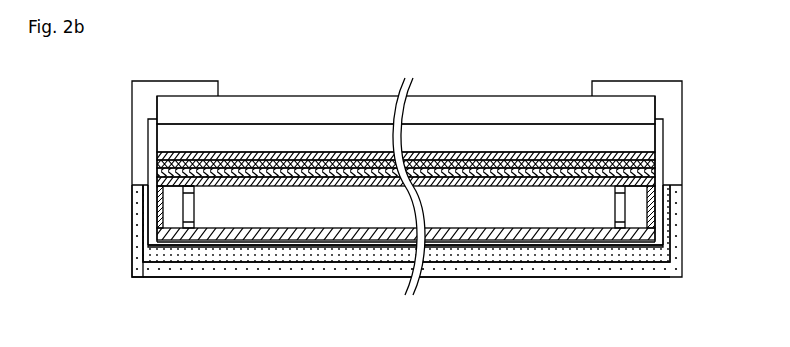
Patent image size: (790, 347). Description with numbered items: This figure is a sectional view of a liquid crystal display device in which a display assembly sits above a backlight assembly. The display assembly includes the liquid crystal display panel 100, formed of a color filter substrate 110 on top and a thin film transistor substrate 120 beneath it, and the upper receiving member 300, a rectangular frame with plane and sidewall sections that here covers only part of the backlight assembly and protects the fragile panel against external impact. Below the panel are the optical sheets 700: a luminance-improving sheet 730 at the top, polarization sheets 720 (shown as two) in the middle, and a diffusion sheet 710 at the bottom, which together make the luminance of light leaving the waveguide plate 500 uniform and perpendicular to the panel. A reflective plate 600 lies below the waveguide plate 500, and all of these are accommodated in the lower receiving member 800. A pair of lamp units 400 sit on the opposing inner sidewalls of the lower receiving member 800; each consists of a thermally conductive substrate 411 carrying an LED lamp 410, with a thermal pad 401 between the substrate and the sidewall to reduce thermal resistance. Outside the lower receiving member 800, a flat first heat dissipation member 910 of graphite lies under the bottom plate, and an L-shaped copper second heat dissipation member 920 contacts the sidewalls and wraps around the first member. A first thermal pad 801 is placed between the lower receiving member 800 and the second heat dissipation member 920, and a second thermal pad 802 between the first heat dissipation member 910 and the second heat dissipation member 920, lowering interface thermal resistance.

The liquid crystal display panel 100 is at (343, 124).
The color filter substrate 110 is at (168, 112).
The thin film transistor substrate 120 is at (168, 136).
The optical sheets 700 is at (343, 182).
The luminance-improving sheet 730 is at (157, 157).
The polarization sheet 720 is at (157, 173).
The diffusion sheet 710 is at (158, 184).
The waveguide plate 500 is at (202, 208).
The reflective plate 600 is at (144, 245).
The upper receiving member 300 is at (670, 99).
The lower receiving member 800 is at (660, 136).
The first thermal pad 801 is at (671, 242).
The second thermal pad 802 is at (613, 263).
The lamp unit 400 is at (469, 215).
The thermal pad 401 is at (653, 222).
The LED lamp 410 is at (622, 212).
The thermally conductive substrate 411 is at (640, 197).
The first heat dissipation member 910 is at (668, 256).
The second heat dissipation member 920 is at (668, 268).